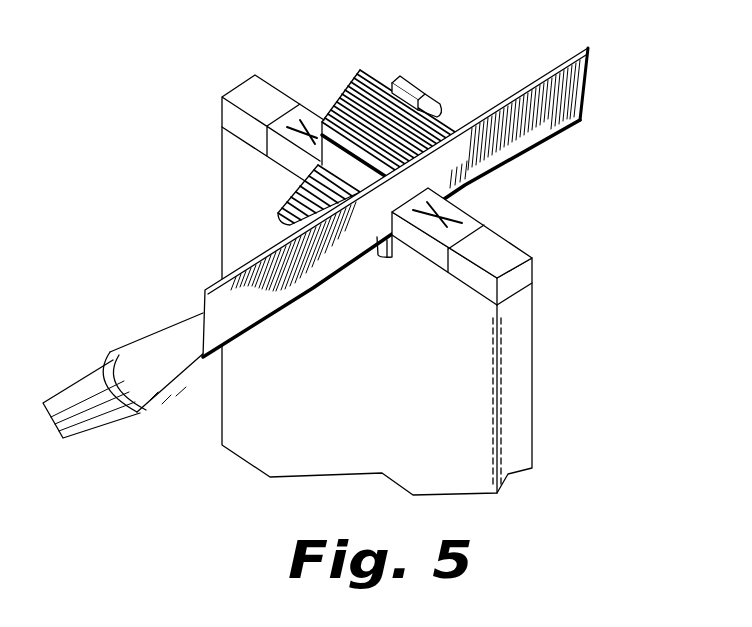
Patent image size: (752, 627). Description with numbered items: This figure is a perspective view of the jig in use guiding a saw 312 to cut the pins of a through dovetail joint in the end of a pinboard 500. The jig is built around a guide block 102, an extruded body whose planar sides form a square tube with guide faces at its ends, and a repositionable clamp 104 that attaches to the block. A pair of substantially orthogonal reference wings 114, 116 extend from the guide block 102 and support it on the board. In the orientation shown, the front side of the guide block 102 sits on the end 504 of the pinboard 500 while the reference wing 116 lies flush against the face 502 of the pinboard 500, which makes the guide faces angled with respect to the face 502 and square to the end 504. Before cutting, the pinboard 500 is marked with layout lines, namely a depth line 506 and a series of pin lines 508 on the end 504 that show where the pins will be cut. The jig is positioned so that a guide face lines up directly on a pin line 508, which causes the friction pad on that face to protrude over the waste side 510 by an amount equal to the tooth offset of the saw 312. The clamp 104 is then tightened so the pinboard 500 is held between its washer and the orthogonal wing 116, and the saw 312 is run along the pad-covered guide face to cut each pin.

The pinboard 500 is at (250, 409).
The face of the pinboard 502 is at (462, 468).
The end of the pinboard 504 is at (233, 86).
The depth line 506 is at (472, 292).
The pin line 508 is at (465, 237).
The waste side 510 is at (468, 220).
The guide block 102 is at (345, 88).
The repositionable clamp 104 is at (422, 78).
The reference wing 114 is at (290, 205).
The reference wing 116 is at (390, 256).
The saw 312 is at (568, 92).